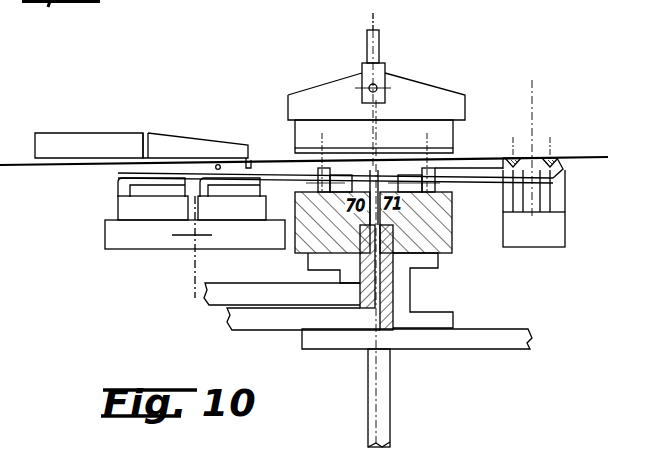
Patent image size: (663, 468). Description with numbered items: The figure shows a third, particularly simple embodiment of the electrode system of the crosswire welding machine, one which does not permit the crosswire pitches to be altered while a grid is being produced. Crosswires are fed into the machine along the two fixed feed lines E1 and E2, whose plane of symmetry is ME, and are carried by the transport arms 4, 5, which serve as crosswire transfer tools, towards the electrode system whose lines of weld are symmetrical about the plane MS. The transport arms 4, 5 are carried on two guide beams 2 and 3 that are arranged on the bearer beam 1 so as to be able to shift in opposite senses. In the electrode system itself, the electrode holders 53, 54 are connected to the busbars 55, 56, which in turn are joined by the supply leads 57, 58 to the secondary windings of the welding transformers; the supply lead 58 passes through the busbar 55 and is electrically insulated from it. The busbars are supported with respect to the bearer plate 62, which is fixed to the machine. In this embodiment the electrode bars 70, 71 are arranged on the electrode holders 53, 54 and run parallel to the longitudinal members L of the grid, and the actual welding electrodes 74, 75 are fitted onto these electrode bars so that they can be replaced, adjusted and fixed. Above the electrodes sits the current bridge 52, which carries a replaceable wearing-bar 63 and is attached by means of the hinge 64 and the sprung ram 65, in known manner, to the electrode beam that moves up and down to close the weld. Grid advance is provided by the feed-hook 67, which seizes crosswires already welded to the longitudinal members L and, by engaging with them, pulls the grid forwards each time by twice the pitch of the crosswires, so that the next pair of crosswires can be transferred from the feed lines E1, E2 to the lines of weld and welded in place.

The bearer beam 1 is at (235, 245).
The guide beam 2 is at (156, 216).
The guide beam 3 is at (234, 216).
The transport arm 4 is at (335, 197).
The transport arm 5 is at (480, 180).
The current bridge 52 is at (360, 144).
The electrode carrier 53 is at (340, 234).
The electrode carrier 54 is at (432, 233).
The busbar 55 is at (320, 263).
The busbar 56 is at (393, 292).
The supply lead 57 is at (283, 303).
The supply lead 58 is at (316, 326).
The bearer plate 62 is at (473, 343).
The wearing-bar 63 is at (394, 154).
The hinge 64 is at (378, 86).
The sprung ram 65 is at (380, 53).
The feed-hook 67 is at (98, 136).
The electrode bar 70 is at (335, 191).
The electrode bar 71 is at (411, 190).
The welding electrode 74 is at (318, 183).
The welding electrode 75 is at (470, 162).
The plane of symmetry of the lines of weld MS is at (372, 15).
The plane of symmetry of the feed lines ME is at (534, 155).
The feed line E1 is at (529, 146).
The feed line E2 is at (552, 145).
The longitudinal member L is at (589, 161).